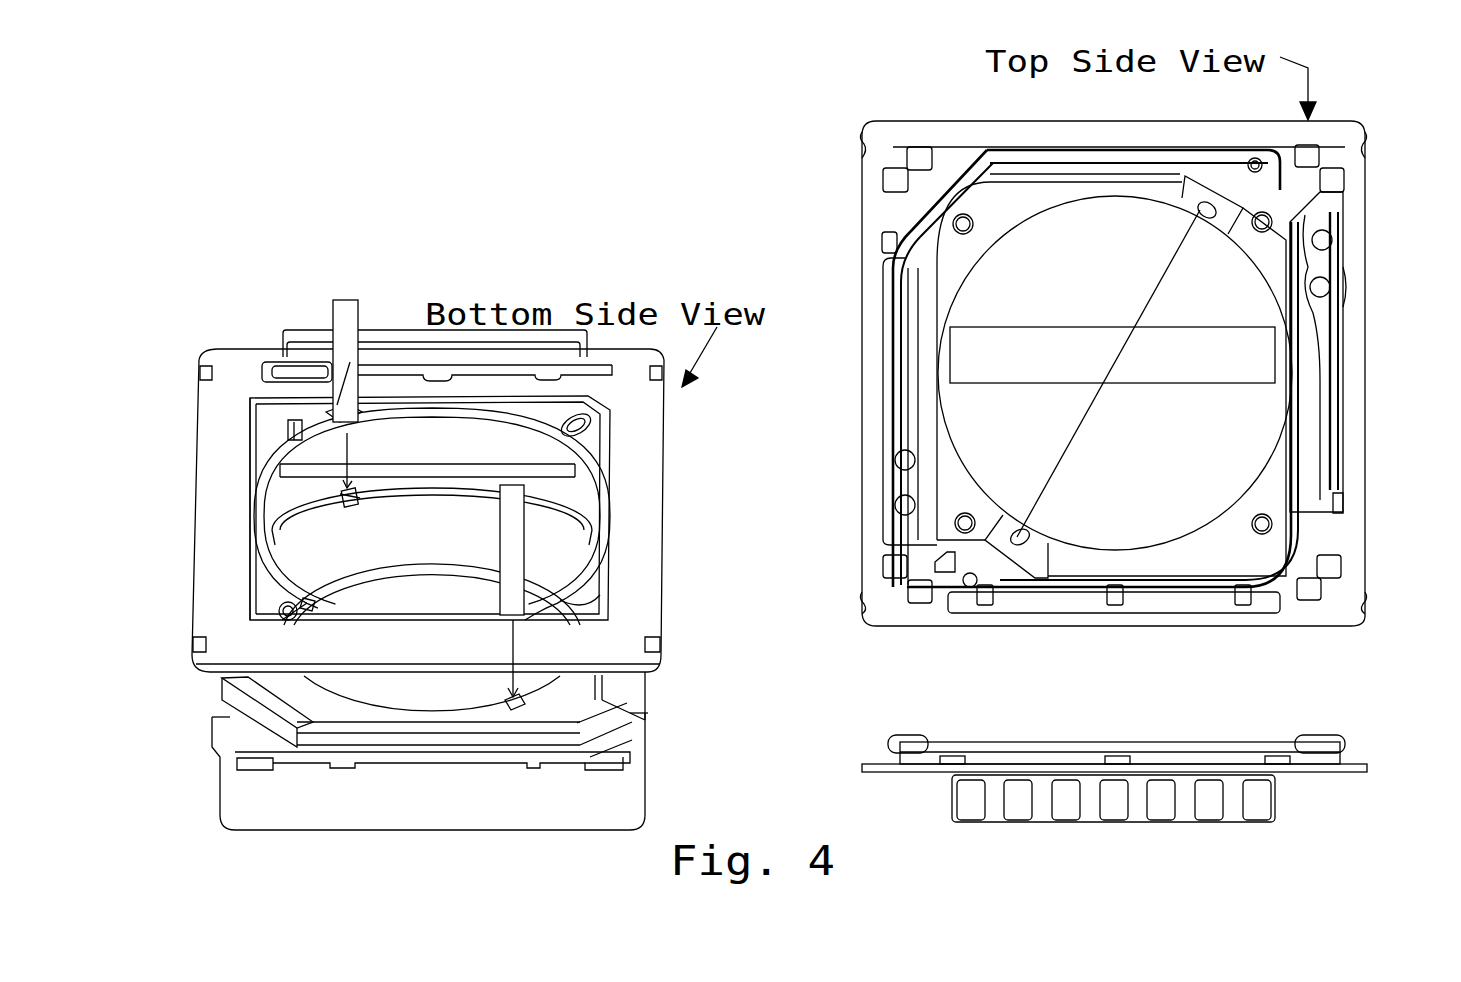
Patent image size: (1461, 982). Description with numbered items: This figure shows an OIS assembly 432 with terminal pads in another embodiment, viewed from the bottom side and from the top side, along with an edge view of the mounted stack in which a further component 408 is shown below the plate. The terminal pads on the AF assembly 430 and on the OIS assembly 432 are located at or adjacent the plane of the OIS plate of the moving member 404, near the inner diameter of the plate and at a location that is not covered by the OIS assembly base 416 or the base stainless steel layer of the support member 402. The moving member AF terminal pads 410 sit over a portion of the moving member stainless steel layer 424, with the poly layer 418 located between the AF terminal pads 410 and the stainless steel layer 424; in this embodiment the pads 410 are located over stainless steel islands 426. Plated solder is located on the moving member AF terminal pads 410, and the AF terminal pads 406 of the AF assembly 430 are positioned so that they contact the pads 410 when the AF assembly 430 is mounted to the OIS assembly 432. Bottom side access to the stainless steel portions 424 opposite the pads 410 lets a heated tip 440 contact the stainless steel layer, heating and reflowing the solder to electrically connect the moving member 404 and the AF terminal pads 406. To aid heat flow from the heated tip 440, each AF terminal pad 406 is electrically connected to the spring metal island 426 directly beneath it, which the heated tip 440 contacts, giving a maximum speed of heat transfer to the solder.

The support member 402 is at (600, 443).
The moving member 404 is at (1338, 732).
The AF terminal pads 406 is at (322, 528).
The connector 408 is at (1342, 782).
The moving member AF terminal pads 410 is at (1197, 210).
The OIS assembly base 416 is at (654, 413).
The poly layer 418 is at (338, 432).
The moving member stainless steel layer 424 is at (263, 504).
The stainless steel islands 426 is at (336, 418).
The AF assembly 430 is at (318, 552).
The OIS assembly 432 is at (1375, 373).
The heated tip 440 is at (336, 432).